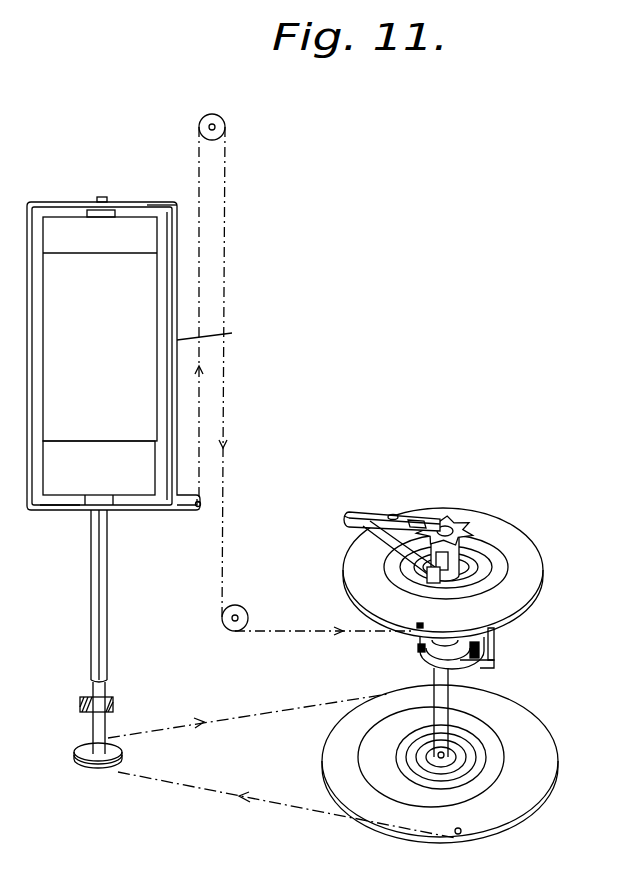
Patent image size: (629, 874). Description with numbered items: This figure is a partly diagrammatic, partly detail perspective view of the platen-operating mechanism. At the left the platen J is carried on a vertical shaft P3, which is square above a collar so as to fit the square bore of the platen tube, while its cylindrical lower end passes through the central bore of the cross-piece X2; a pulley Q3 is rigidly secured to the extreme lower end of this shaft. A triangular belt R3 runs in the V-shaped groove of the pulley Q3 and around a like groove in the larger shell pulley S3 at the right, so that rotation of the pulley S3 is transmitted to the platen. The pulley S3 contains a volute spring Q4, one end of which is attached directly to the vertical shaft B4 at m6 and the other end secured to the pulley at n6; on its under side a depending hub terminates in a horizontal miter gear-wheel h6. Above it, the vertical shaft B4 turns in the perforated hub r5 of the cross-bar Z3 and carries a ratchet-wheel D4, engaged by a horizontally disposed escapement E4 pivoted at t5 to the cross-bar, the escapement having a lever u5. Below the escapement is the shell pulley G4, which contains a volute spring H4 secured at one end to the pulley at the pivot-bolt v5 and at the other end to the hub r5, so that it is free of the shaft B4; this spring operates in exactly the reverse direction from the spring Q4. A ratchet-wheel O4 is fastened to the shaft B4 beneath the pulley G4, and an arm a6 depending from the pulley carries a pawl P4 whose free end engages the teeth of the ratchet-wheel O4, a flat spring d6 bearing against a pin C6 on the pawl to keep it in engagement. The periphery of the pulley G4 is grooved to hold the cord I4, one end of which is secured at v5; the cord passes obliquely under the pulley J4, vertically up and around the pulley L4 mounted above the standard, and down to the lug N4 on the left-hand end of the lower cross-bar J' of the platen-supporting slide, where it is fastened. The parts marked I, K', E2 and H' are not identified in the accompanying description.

The casing frame I is at (29, 358).
The frame top K' is at (161, 191).
The platen J is at (100, 325).
The lower panel E2 is at (99, 456).
The lower cross-bar J' is at (60, 524).
The vertical shaft P3 is at (109, 614).
The cross-piece X2 is at (80, 705).
The pulley Q3 is at (88, 766).
The pulley L4 is at (216, 127).
The pulley J4 is at (245, 611).
The cord I4 is at (228, 388).
The frame side H' is at (215, 331).
The lug N4 is at (203, 510).
The belt R3 is at (226, 800).
The shell pulley G4 is at (535, 571).
The volute spring H4 is at (508, 546).
The hub r5 is at (460, 566).
The pivot-bolt v5 is at (424, 627).
The ratchet-wheel D4 is at (468, 526).
The miter gear-wheel h6 is at (430, 570).
The cross-bar Z3 is at (378, 513).
The pivot t5 is at (396, 514).
The escapement E4 is at (414, 522).
The escapement lever u5 is at (348, 521).
The vertical pin C6 is at (440, 664).
The ratchet-wheel O4 is at (418, 645).
The flat spring d6 is at (480, 652).
The lug or arm a6 is at (495, 633).
The dog or pawl P4 is at (490, 666).
The vertical shaft B4 is at (449, 699).
The shell pulley S3 is at (440, 764).
The volute spring Q4 is at (504, 734).
The spring attachment to shaft m6 is at (438, 758).
The spring attachment to pulley n6 is at (460, 828).